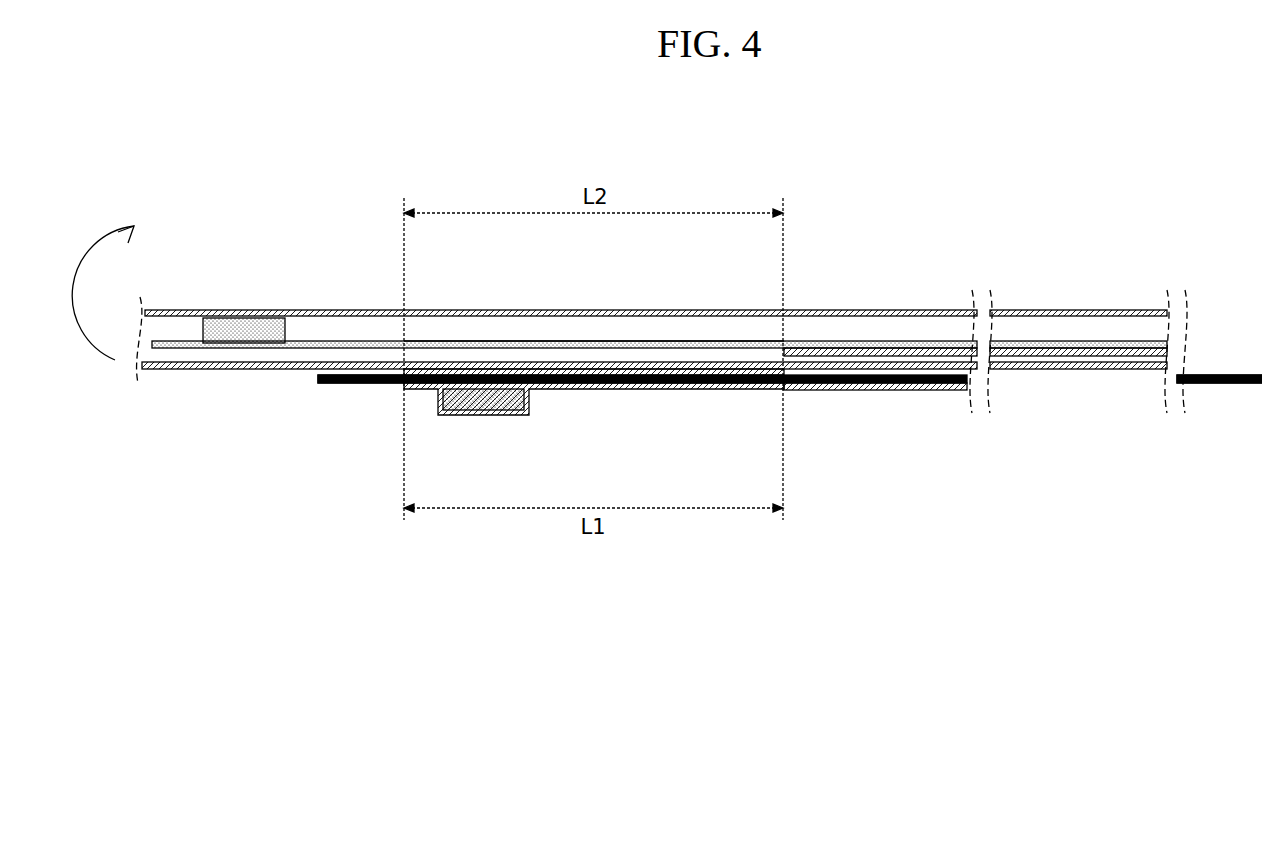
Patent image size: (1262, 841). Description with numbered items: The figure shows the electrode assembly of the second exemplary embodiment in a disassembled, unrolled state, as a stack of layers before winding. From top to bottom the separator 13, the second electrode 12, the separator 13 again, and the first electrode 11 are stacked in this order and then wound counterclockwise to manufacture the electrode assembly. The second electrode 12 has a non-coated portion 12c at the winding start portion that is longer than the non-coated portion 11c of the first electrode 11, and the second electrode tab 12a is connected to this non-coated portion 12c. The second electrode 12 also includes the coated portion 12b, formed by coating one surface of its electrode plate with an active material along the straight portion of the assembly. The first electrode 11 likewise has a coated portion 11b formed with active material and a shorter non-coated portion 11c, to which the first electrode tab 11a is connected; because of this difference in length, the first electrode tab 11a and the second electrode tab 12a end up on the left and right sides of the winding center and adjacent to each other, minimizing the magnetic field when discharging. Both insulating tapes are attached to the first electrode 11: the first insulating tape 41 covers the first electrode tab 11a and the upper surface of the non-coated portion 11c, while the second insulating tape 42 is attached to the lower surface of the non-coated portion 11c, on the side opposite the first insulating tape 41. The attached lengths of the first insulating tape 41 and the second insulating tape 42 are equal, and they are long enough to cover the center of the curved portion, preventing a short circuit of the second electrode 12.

The first electrode 11 is at (331, 386).
The first electrode tab 11a is at (482, 402).
The coated portion 11b is at (860, 390).
The non-coated portion 11c is at (360, 384).
The second electrode 12 is at (315, 339).
The second electrode tab 12a is at (243, 330).
The coated portion 12b is at (933, 357).
The non-coated portion 12c is at (472, 340).
The separator 13 is at (540, 362).
The first insulating tape 41 is at (703, 390).
The second insulating tape 42 is at (702, 369).